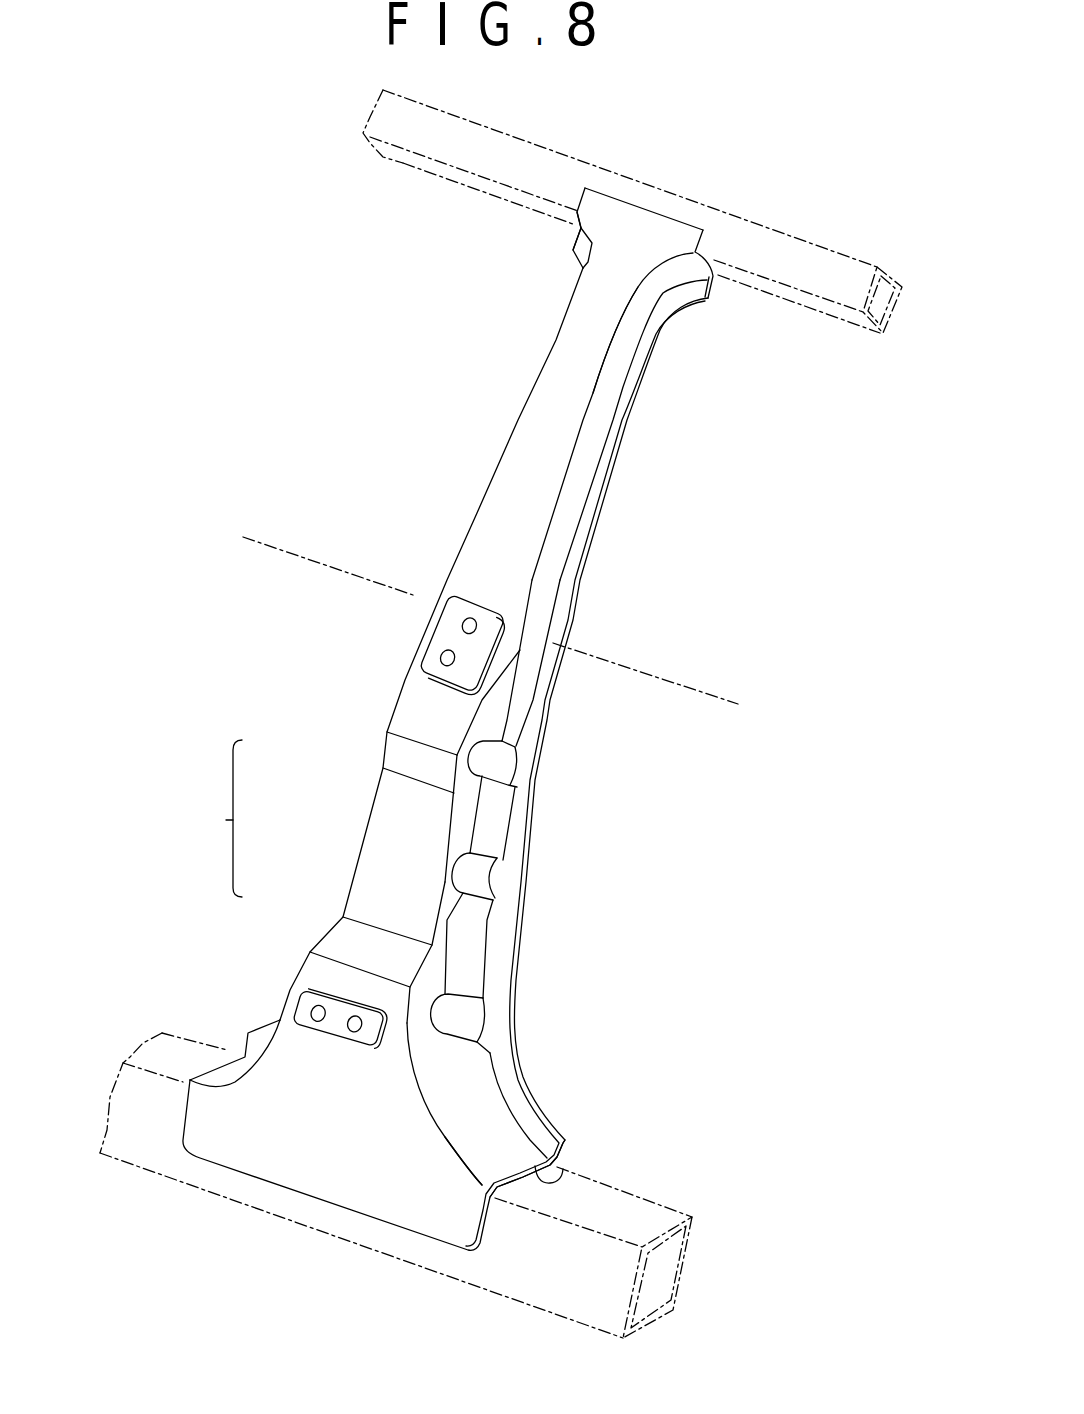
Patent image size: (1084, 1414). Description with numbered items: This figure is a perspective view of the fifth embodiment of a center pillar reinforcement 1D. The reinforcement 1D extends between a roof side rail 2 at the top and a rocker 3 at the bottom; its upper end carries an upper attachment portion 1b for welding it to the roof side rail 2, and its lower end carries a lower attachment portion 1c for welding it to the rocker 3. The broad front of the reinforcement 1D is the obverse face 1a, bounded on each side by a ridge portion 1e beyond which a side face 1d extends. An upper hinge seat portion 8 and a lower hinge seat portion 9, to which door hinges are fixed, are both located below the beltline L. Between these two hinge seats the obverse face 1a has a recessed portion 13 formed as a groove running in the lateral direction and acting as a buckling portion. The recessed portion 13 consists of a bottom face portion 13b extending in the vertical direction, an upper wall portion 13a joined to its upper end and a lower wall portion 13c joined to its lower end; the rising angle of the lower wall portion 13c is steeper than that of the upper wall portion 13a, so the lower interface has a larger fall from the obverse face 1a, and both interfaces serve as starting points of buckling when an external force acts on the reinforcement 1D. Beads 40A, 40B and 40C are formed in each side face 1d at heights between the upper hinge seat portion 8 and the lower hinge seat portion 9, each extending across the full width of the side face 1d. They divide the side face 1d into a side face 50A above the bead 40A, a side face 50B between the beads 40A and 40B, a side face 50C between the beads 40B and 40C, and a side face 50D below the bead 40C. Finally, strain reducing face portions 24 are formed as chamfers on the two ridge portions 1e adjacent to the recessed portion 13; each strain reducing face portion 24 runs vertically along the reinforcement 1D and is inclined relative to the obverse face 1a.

The obverse face 1a is at (530, 404).
The upper attachment portion 1b is at (712, 262).
The lower attachment portion 1c is at (538, 1180).
The side face 1d is at (580, 232).
The ridge portion 1e is at (580, 436).
The reinforcement 1D is at (595, 560).
The roof side rail 2 is at (830, 245).
The rocker 3 is at (683, 1263).
The upper hinge seat portion 8 is at (440, 636).
The lower hinge seat portion 9 is at (306, 1010).
The recessed portion 13 is at (219, 818).
The upper wall portion 13a is at (397, 748).
The bottom face portion 13b is at (385, 816).
The lower wall portion 13c is at (333, 942).
The strain reducing face portion 24 is at (417, 1027).
The bead 40A is at (497, 762).
The bead 40B is at (470, 877).
The bead 40C is at (463, 1020).
The side face 50A is at (520, 690).
The side face 50B is at (495, 818).
The side face 50C is at (485, 933).
The side face 50D is at (487, 1092).
The beltline L is at (487, 626).